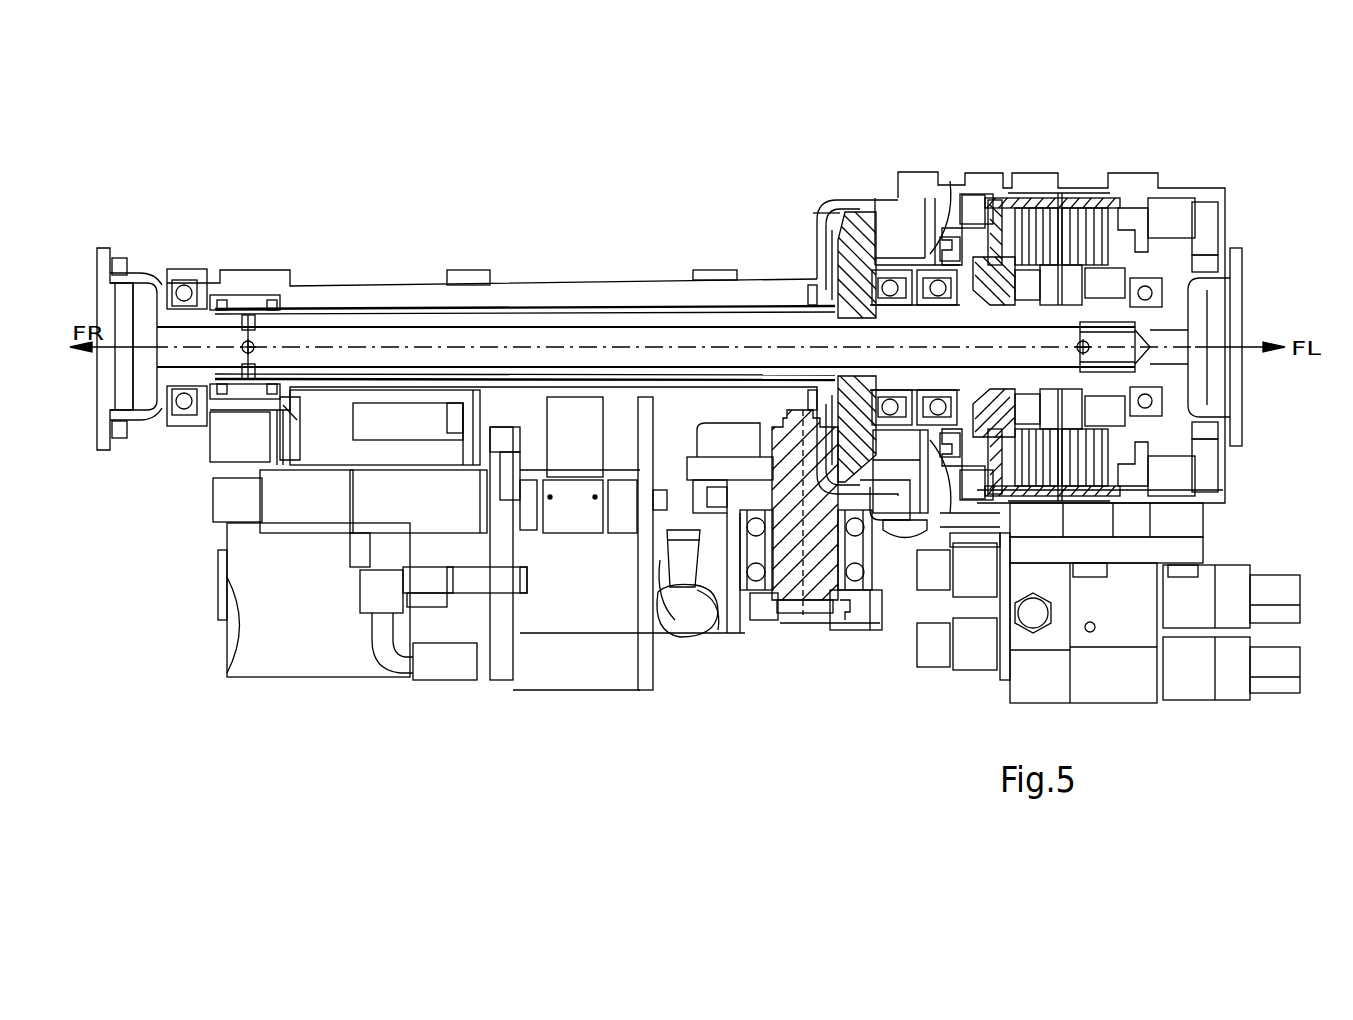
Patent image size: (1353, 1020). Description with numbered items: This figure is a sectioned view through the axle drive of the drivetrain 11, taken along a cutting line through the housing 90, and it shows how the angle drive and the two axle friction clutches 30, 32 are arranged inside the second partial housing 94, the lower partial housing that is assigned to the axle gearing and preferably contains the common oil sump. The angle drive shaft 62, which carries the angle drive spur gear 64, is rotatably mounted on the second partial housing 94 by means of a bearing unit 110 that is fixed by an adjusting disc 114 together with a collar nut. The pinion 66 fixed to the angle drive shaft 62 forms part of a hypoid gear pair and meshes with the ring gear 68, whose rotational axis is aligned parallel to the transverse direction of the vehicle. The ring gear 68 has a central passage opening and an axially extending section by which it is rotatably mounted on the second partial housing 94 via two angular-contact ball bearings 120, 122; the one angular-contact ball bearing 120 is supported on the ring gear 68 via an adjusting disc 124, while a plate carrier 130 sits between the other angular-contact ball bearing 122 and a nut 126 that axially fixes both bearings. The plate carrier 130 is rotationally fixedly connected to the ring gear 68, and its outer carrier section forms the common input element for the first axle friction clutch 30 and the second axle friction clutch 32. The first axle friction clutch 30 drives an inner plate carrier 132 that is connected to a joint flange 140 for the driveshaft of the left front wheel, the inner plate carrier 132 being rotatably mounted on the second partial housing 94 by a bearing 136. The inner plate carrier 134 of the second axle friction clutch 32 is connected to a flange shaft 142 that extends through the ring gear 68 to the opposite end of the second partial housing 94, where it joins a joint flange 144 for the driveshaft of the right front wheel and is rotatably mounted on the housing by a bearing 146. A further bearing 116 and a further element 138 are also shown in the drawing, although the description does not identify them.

The drivetrain 11 is at (1263, 150).
The first axle friction clutch 30 is at (1112, 205).
The second axle friction clutch 32 is at (1043, 180).
The angle drive shaft 62 is at (793, 615).
The angle drive spur gear 64 is at (688, 523).
The pinion 66 is at (770, 457).
The ring gear 68 is at (833, 257).
The housing 90 is at (533, 277).
The second partial housing 94 is at (570, 283).
The bearing unit 110 is at (745, 592).
The adjusting disc 114 is at (720, 612).
The bearing 116 is at (838, 625).
The angular-contact ball bearing 120 is at (880, 268).
The angular-contact ball bearing 122 is at (928, 268).
The adjusting disc 124 is at (835, 212).
The nut 126 is at (1005, 200).
The plate carrier 130 is at (1068, 228).
The inner plate carrier 132 is at (1205, 262).
The inner plate carrier 134 is at (1025, 232).
The bearing 136 is at (1155, 275).
The clutch plates 138 is at (1075, 215).
The joint flange 140 is at (1240, 270).
The flange shaft 142 is at (377, 290).
The joint flange 144 is at (150, 283).
The bearing 146 is at (190, 287).